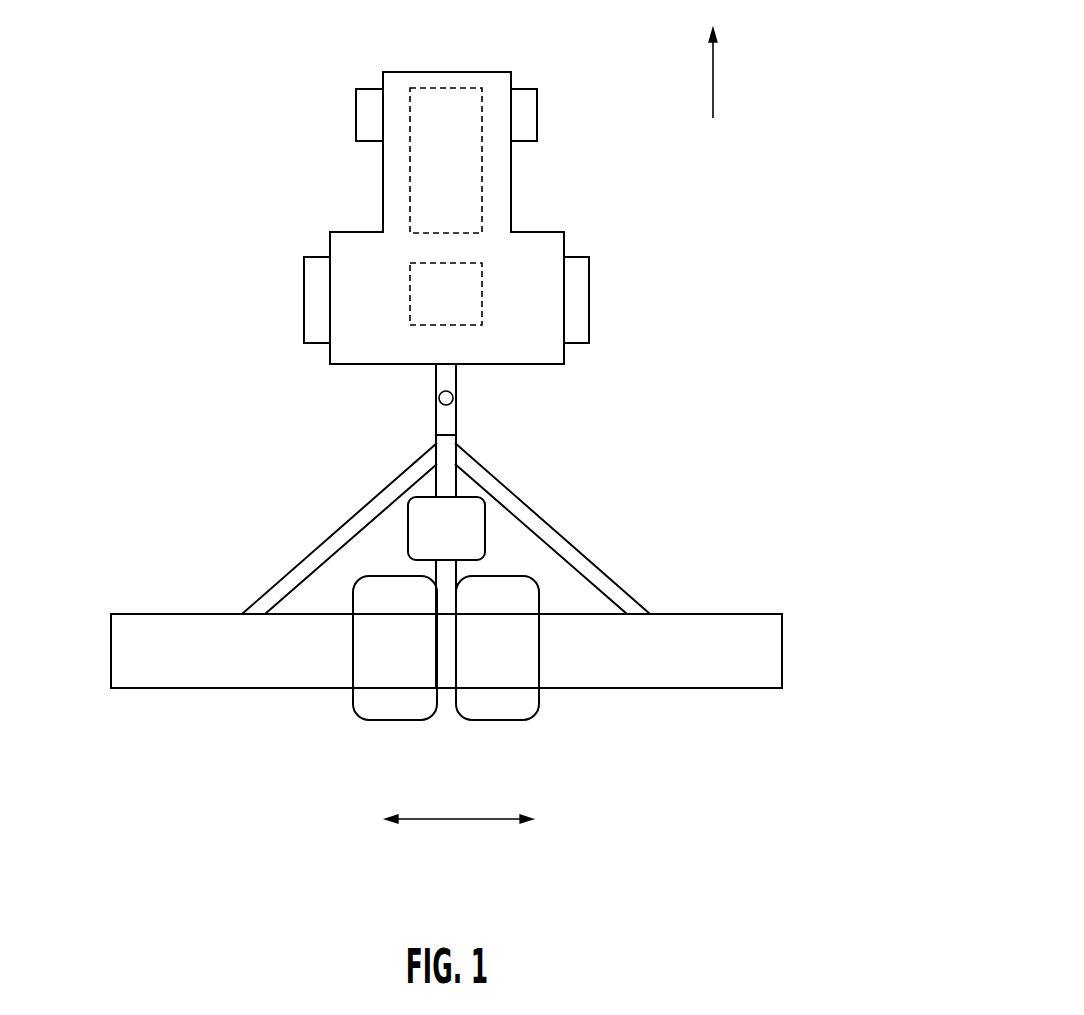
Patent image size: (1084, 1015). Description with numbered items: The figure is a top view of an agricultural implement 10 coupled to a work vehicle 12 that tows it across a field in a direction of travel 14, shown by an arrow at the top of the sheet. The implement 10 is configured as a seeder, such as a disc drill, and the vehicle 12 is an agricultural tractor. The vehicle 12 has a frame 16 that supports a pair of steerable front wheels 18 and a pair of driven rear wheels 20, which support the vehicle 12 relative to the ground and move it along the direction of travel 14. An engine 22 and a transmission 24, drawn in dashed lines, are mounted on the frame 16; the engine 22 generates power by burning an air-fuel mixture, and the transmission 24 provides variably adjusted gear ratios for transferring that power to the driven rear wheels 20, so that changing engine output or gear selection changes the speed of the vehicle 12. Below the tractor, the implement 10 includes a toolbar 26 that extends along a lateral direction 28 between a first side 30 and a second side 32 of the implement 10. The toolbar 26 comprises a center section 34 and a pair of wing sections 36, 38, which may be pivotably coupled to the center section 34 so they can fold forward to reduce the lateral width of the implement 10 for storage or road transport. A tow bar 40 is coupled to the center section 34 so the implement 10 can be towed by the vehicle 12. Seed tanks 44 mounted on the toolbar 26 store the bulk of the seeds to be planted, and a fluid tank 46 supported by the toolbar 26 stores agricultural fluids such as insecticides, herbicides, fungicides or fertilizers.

The agricultural implement 10 is at (449, 622).
The work vehicle 12 is at (397, 182).
The direction of travel 14 is at (713, 78).
The frame 16 is at (382, 185).
The front wheels 18 is at (357, 117).
The rear wheels 20 is at (303, 298).
The engine 22 is at (435, 86).
The transmission 24 is at (482, 275).
The toolbar 26 is at (304, 692).
The lateral direction 28 is at (460, 820).
The first side 30 is at (92, 662).
The second side 32 is at (808, 662).
The center section 34 is at (457, 483).
The wing section 36 is at (175, 688).
The wing section 38 is at (633, 688).
The tow bar 40 is at (436, 418).
The seed tanks 44 is at (393, 722).
The fluid tanks 46 is at (485, 533).